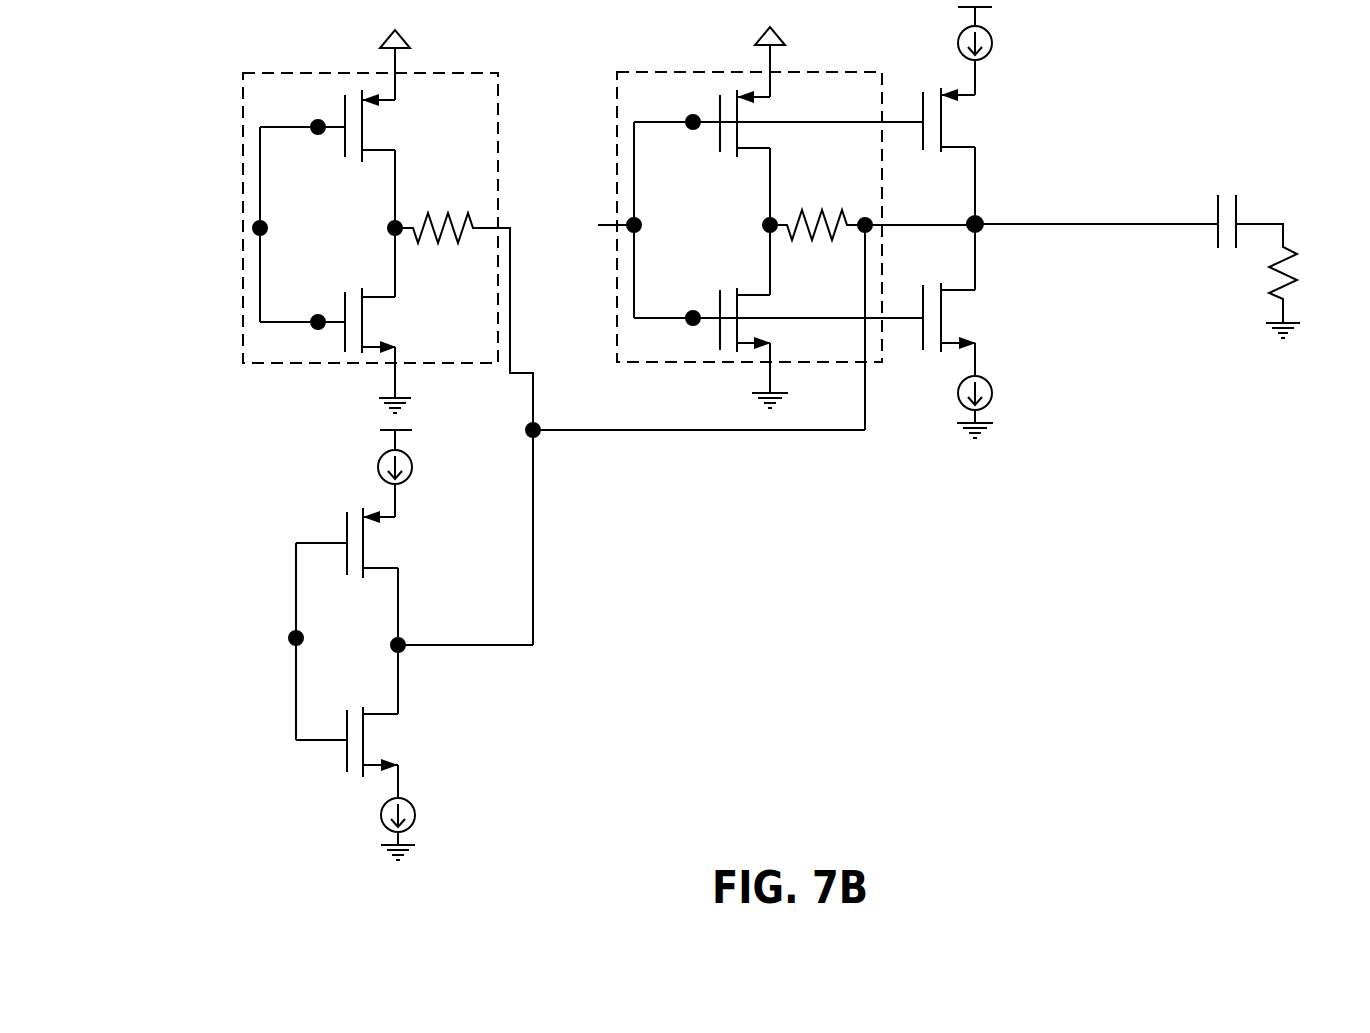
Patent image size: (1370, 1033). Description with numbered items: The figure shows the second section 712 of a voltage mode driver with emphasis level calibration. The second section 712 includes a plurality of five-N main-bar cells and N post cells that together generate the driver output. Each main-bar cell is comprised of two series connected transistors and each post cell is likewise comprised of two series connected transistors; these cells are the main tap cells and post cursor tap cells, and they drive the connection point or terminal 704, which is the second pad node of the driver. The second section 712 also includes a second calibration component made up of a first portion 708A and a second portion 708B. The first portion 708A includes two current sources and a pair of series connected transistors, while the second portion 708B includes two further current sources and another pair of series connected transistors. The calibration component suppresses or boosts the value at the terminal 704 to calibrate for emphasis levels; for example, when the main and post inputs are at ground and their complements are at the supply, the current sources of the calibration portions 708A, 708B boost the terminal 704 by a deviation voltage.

The VPAD2 terminal 704 is at (1004, 251).
The portion of second calibration component 708A is at (512, 731).
The portion of second calibration component 708B is at (1039, 457).
The second section 712 is at (1008, 762).